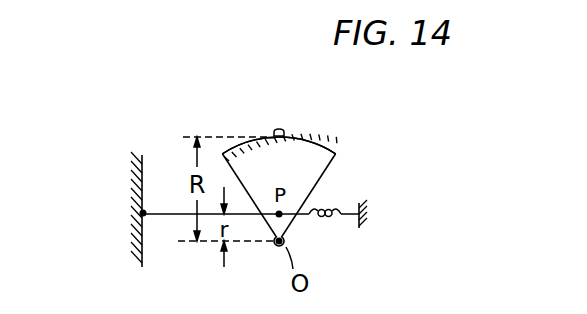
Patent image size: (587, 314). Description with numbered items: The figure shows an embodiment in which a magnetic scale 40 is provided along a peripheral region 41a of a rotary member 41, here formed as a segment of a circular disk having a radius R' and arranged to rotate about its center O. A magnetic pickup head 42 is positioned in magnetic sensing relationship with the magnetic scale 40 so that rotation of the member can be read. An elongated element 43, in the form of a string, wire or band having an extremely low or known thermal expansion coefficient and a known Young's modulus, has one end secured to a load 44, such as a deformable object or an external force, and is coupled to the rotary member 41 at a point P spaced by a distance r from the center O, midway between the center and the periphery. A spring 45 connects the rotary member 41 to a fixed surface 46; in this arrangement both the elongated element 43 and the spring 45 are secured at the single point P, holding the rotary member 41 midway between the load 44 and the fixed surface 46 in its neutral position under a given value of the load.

The magnetic scale 40 is at (298, 139).
The rotary member 41 is at (323, 170).
The peripheral region 41a is at (330, 140).
The magnetic pickup head 42 is at (280, 127).
The elongated element 43 is at (170, 207).
The load 44 is at (128, 208).
The spring 45 is at (327, 223).
The fixed surface 46 is at (371, 212).